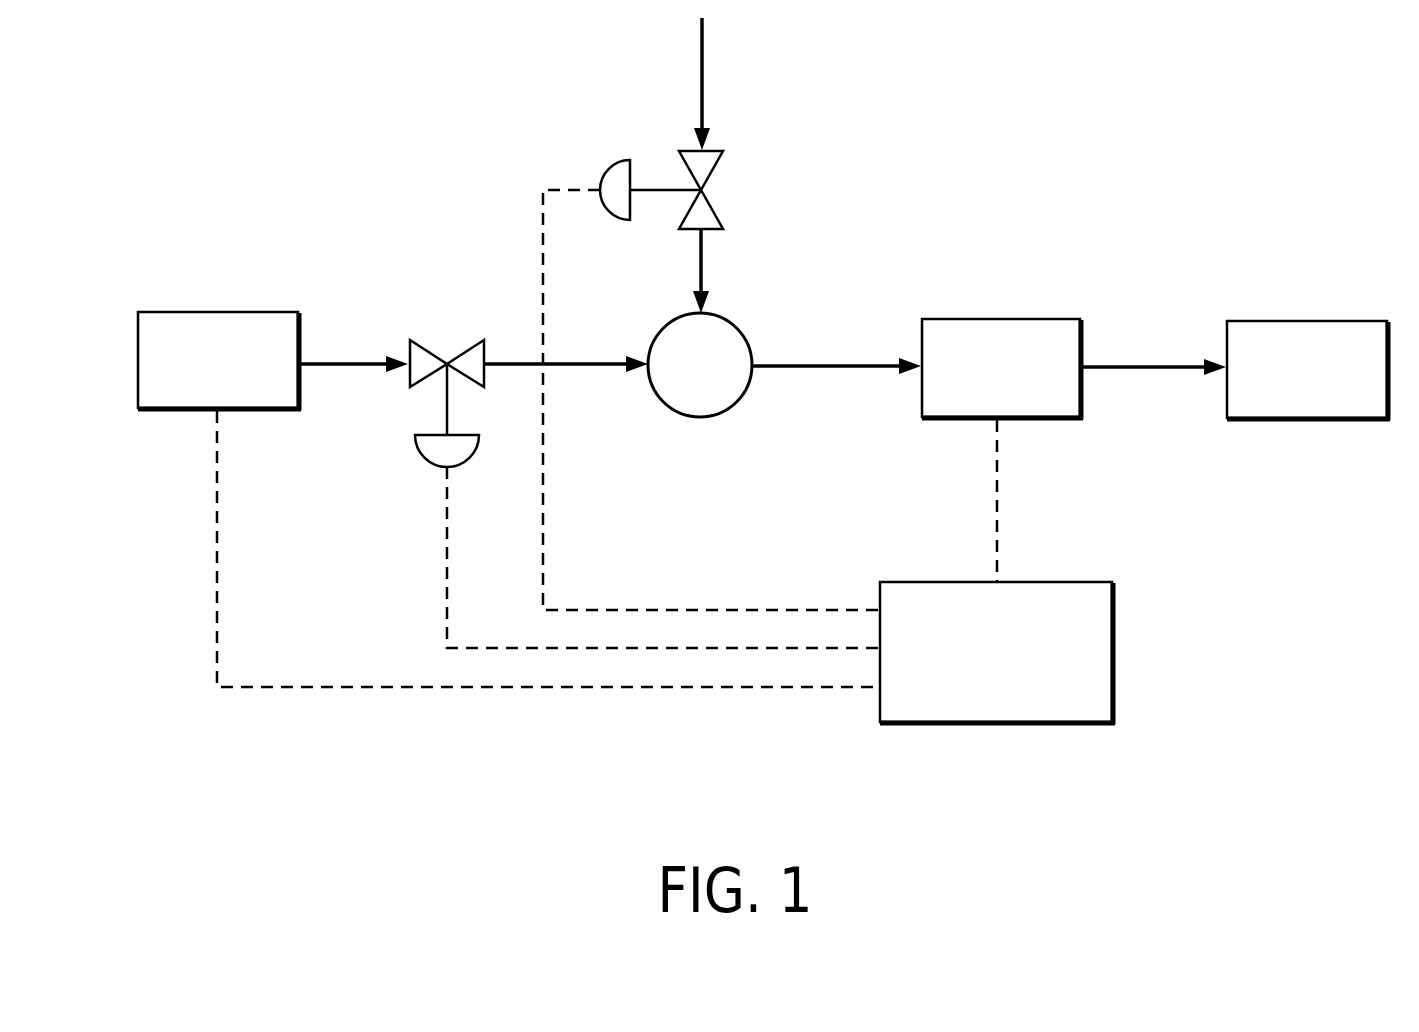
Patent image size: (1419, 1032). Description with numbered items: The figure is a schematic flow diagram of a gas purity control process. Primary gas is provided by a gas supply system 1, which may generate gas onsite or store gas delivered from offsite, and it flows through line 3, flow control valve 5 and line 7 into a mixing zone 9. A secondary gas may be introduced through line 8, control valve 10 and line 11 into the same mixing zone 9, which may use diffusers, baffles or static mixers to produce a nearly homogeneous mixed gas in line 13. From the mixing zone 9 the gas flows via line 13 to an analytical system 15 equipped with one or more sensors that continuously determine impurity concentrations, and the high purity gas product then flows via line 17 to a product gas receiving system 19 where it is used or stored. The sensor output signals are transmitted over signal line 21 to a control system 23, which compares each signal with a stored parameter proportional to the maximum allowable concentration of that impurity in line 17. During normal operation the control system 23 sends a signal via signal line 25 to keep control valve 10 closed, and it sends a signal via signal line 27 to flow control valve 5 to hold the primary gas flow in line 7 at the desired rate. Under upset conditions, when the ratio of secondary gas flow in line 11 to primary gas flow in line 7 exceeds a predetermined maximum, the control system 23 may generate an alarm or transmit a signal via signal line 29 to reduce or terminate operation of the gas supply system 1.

The gas supply system 1 is at (205, 378).
The line 3 is at (337, 362).
The flow control valve 5 is at (418, 383).
The line 7 is at (605, 363).
The line 8 is at (702, 82).
The mixing zone 9 is at (686, 380).
The control valve 10 is at (717, 207).
The line 11 is at (701, 258).
The line 13 is at (853, 369).
The analytical system 15 is at (974, 382).
The line 17 is at (1173, 370).
The product gas receiving system 19 is at (1286, 383).
The signal line 21 is at (998, 505).
The control system 23 is at (976, 662).
The signal line 25 is at (544, 527).
The signal line 27 is at (446, 540).
The signal line 29 is at (218, 598).